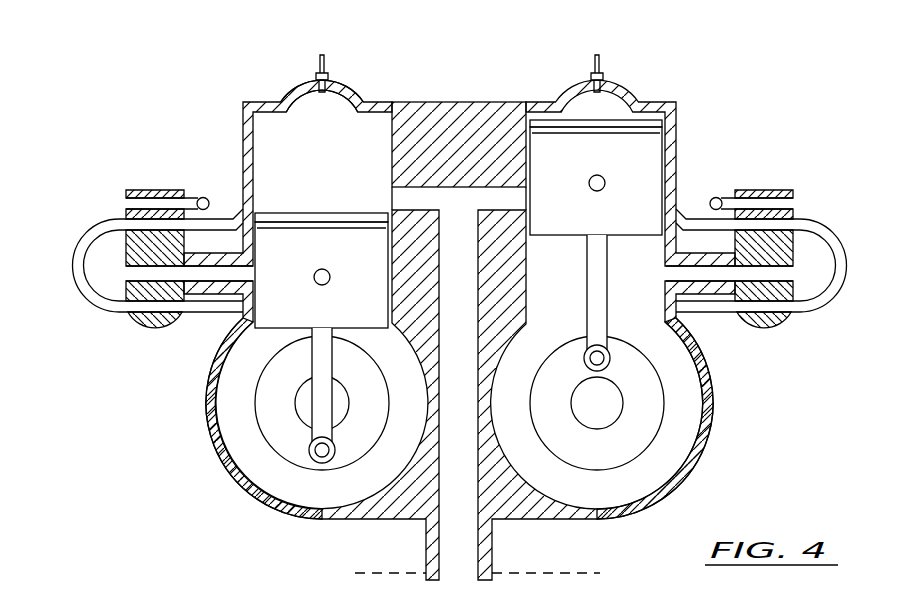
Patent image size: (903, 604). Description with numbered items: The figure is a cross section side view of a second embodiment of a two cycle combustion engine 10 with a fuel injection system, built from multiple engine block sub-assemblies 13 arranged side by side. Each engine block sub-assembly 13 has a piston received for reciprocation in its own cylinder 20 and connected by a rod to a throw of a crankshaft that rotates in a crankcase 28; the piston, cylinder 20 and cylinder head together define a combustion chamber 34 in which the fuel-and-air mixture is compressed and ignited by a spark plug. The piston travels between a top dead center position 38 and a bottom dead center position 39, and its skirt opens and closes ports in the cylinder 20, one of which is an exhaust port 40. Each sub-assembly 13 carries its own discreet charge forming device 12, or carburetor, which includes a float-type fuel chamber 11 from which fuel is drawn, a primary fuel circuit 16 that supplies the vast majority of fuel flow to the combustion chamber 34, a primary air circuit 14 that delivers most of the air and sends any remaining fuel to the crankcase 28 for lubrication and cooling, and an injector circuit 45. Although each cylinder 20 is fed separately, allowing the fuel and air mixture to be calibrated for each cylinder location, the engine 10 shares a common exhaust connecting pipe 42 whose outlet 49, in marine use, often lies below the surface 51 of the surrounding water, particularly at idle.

The two cycle combustion engine 10 is at (458, 294).
The fuel chamber 11 is at (141, 342).
The charge forming device 12 is at (91, 212).
The engine block subassembly 13 is at (233, 473).
The primary air circuit 14 is at (118, 272).
The primary fuel circuit 16 is at (156, 188).
The cylinder 20 is at (332, 145).
The crankcase 28 is at (228, 384).
The combustion chamber 34 is at (337, 108).
The top dead center position 38 is at (642, 118).
The bottom dead center position 39 is at (279, 210).
The exhaust port 40 is at (391, 199).
The exhaust pipe 42 is at (468, 488).
The injector circuit 45 is at (89, 304).
The outlet 49 is at (467, 572).
The surface 51 is at (547, 573).